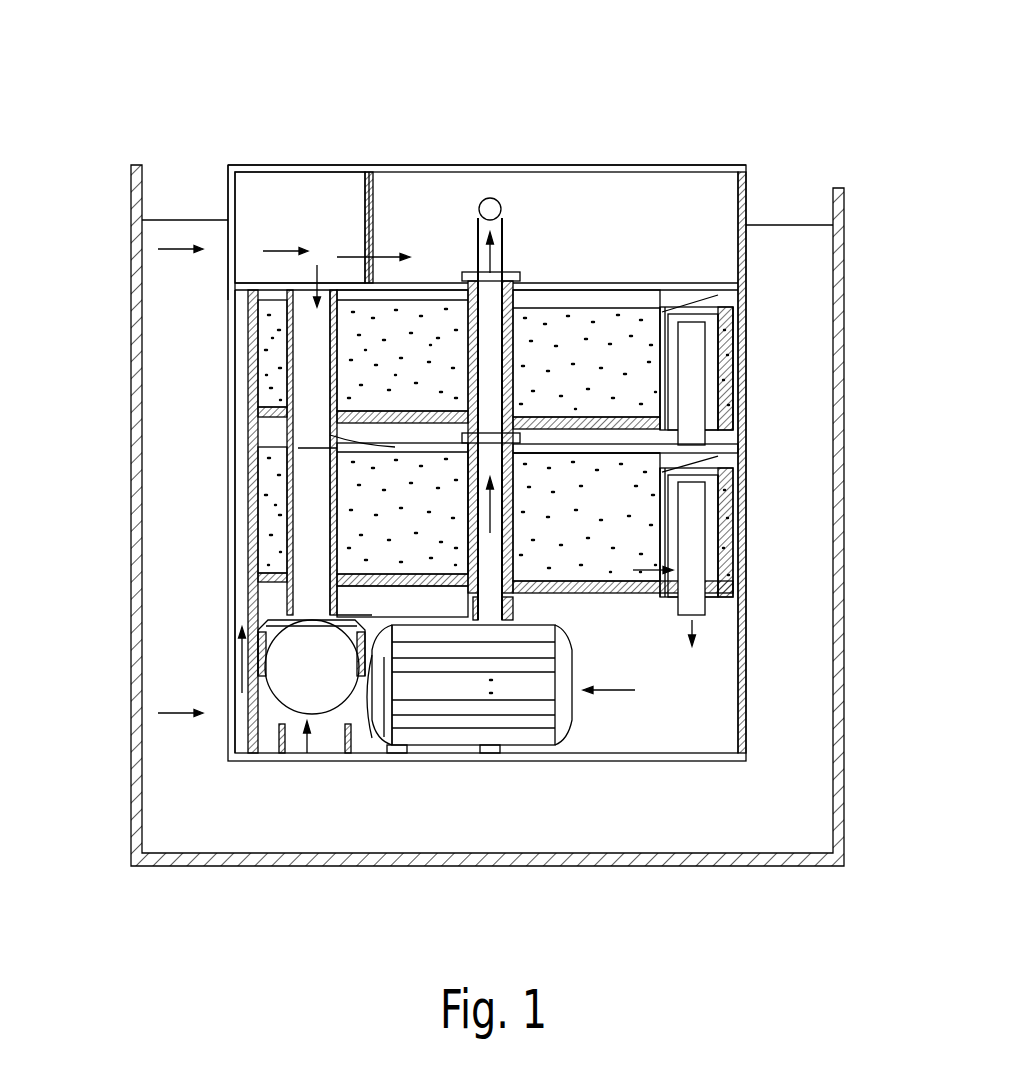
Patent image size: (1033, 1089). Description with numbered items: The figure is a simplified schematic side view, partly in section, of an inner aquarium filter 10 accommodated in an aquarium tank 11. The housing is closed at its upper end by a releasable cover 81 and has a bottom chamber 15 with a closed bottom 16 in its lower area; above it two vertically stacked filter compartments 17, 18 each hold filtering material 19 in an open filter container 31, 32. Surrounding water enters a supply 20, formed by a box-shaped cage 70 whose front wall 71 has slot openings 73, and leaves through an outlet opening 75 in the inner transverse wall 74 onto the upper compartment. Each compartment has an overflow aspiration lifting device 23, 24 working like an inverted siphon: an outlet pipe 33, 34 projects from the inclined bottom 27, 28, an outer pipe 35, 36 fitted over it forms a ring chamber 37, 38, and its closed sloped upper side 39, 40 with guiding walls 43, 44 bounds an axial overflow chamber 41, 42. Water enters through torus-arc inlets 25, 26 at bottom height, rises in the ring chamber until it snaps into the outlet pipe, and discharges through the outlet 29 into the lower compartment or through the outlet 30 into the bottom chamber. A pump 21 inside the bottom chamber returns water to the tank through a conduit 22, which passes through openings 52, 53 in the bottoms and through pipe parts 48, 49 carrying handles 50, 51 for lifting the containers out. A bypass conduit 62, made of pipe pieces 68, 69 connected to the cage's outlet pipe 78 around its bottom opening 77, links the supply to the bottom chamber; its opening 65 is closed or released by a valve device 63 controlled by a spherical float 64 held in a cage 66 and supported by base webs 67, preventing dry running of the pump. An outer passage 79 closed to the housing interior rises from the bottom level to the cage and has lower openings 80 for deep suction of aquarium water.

The filter 10 is at (646, 141).
The aquarium tank 11 is at (132, 447).
The bottom chamber 15 is at (700, 707).
The bottom 16 is at (626, 763).
The upper filter compartment 17 is at (587, 296).
The lower filter compartment 18 is at (330, 435).
The filtering material 19 is at (625, 327).
The supply 20 is at (307, 182).
The pump 21 is at (528, 700).
The conduit 22 is at (500, 235).
The overflow aspiration lifting device 23 is at (746, 391).
The overflow aspiration lifting device 24 is at (756, 521).
The inlet 25 is at (660, 407).
The inlet 26 is at (663, 567).
The bottom 27 is at (422, 328).
The bottom 28 is at (425, 625).
The outlet 29 is at (723, 448).
The outlet 30 is at (703, 614).
The filter container 31 is at (272, 407).
The filter container 32 is at (270, 565).
The outlet pipe 33 is at (705, 337).
The outlet pipe 34 is at (722, 510).
The outer pipe 35 is at (723, 363).
The outer pipe 36 is at (735, 548).
The ring chamber 37 is at (670, 357).
The ring chamber 38 is at (683, 507).
The upper side 39 is at (693, 300).
The upper side 40 is at (680, 453).
The axial overflow chamber 41 is at (680, 307).
The axial overflow chamber 42 is at (653, 480).
The guiding walls 43 is at (697, 303).
The guiding walls 44 is at (722, 470).
The pipe part 48 is at (465, 314).
The pipe part 49 is at (467, 497).
The handle 50 is at (520, 273).
The handle 51 is at (446, 446).
The opening 52 is at (398, 446).
The opening 53 is at (476, 598).
The bypass conduit 62 is at (313, 350).
The valve device 63 is at (304, 742).
The float 64 is at (300, 683).
The opening 65 is at (310, 617).
The cage 66 is at (370, 740).
The base webs 67 is at (278, 740).
The pipe piece 68 is at (340, 370).
The pipe piece 69 is at (340, 538).
The cage 70 is at (370, 164).
The front wall 71 is at (230, 262).
The openings 73 is at (228, 195).
The inner transverse wall 74 is at (373, 205).
The outlet opening 75 is at (374, 278).
The bottom opening 77 is at (322, 262).
The outlet pipe 78 is at (337, 294).
The outer passage 79 is at (240, 492).
The openings 80 is at (240, 690).
The cover 81 is at (528, 165).